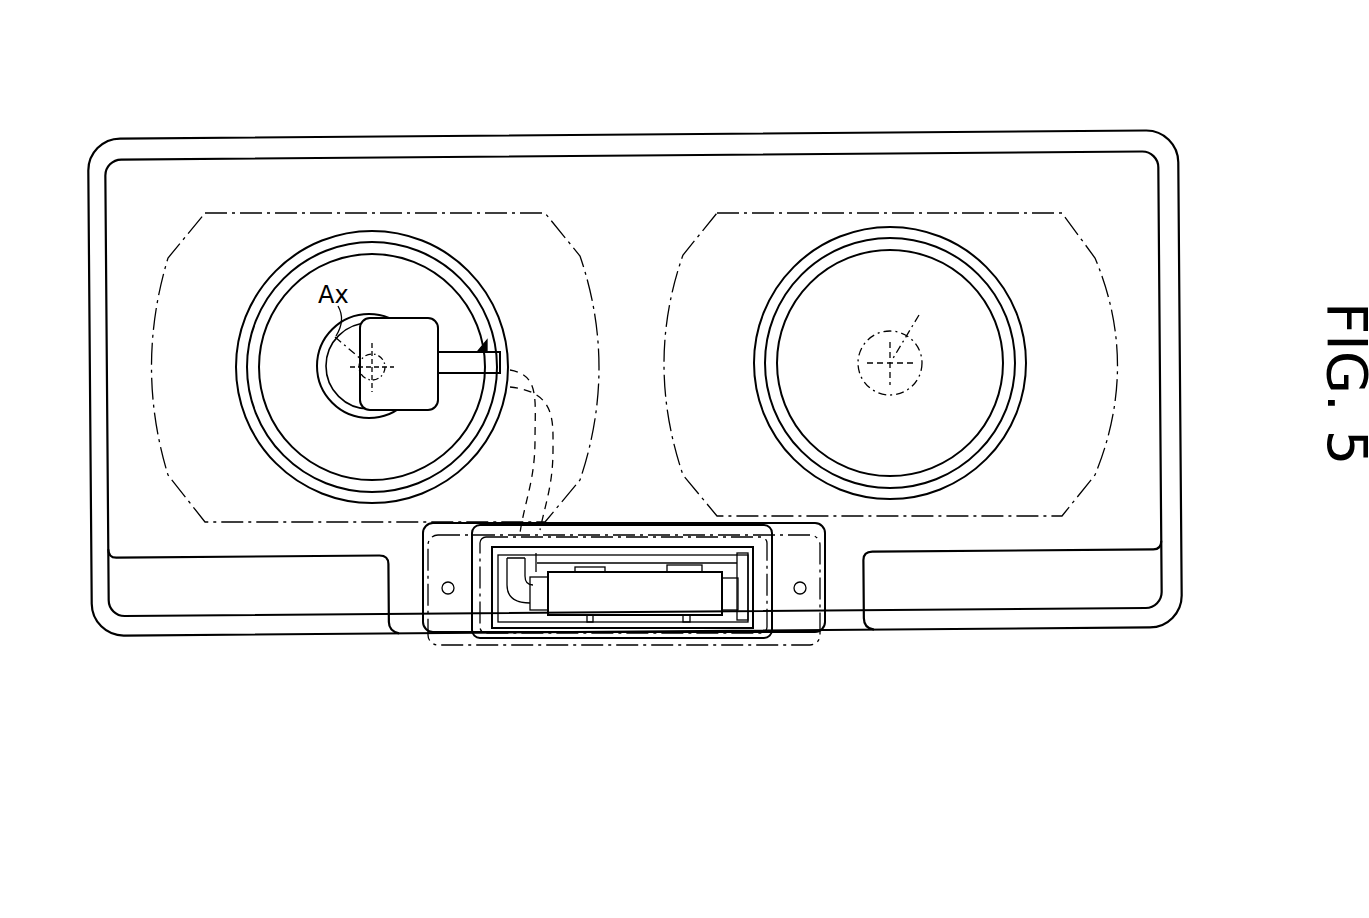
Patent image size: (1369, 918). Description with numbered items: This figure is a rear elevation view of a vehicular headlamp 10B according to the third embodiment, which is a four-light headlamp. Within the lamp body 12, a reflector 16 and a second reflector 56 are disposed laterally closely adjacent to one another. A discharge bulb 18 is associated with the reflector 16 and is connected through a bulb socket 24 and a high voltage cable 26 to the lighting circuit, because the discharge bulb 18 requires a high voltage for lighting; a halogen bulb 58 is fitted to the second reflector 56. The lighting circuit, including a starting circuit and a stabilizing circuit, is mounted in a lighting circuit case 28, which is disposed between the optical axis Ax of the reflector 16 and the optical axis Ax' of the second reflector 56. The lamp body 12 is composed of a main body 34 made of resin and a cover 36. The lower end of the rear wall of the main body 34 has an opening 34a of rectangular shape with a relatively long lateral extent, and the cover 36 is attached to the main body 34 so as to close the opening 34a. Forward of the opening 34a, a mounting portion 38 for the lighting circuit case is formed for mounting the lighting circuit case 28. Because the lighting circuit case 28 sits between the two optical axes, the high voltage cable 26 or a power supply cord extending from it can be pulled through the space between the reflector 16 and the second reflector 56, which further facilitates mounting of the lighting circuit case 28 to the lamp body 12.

The vehicular headlamp 10B is at (926, 114).
The lamp body 12 is at (682, 635).
The reflector 16 is at (576, 227).
The discharge bulb 18 is at (354, 392).
The bulb socket 24 is at (424, 404).
The high voltage cable 26 is at (487, 345).
The lighting circuit case 28 is at (622, 625).
The main body 34 is at (899, 645).
The opening 34a is at (652, 608).
The cover 36 is at (777, 652).
The mounting portion 38 is at (510, 662).
The second reflector 56 is at (687, 235).
The halogen bulb 58 is at (887, 403).